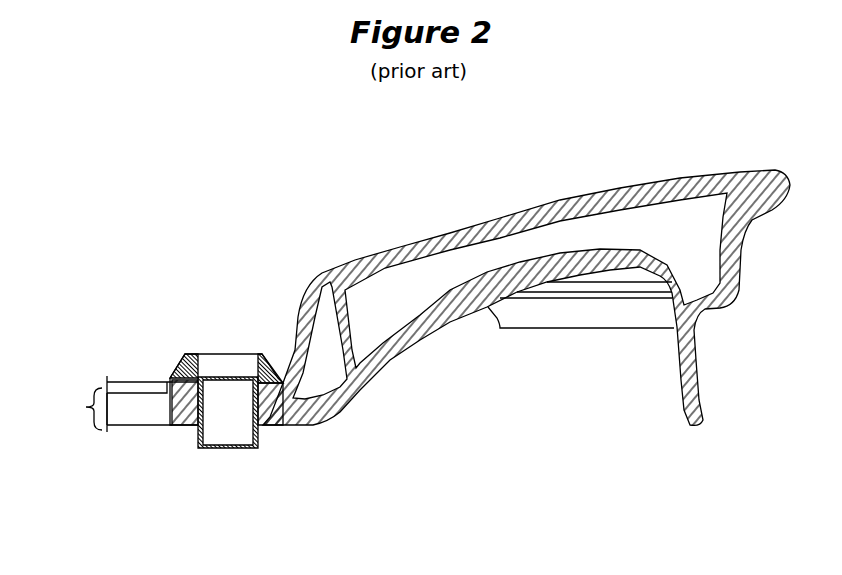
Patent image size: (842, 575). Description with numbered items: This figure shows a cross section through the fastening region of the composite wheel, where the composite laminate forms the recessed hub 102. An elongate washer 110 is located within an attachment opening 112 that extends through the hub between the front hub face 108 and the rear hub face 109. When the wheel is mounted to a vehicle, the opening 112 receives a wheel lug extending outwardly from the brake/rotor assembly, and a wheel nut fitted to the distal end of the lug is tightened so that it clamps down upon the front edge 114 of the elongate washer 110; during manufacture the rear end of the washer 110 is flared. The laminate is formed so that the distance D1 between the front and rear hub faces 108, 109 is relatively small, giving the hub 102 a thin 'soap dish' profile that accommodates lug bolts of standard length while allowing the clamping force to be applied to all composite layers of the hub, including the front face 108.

The hub 102 is at (157, 143).
The front hub face 108 is at (138, 381).
The rear hub face 109 is at (137, 427).
The elongate washer 110 is at (268, 423).
The attachment opening 112 is at (228, 446).
The front edge 114 is at (268, 352).
The distance between front and rear hub faces D1 is at (77, 409).